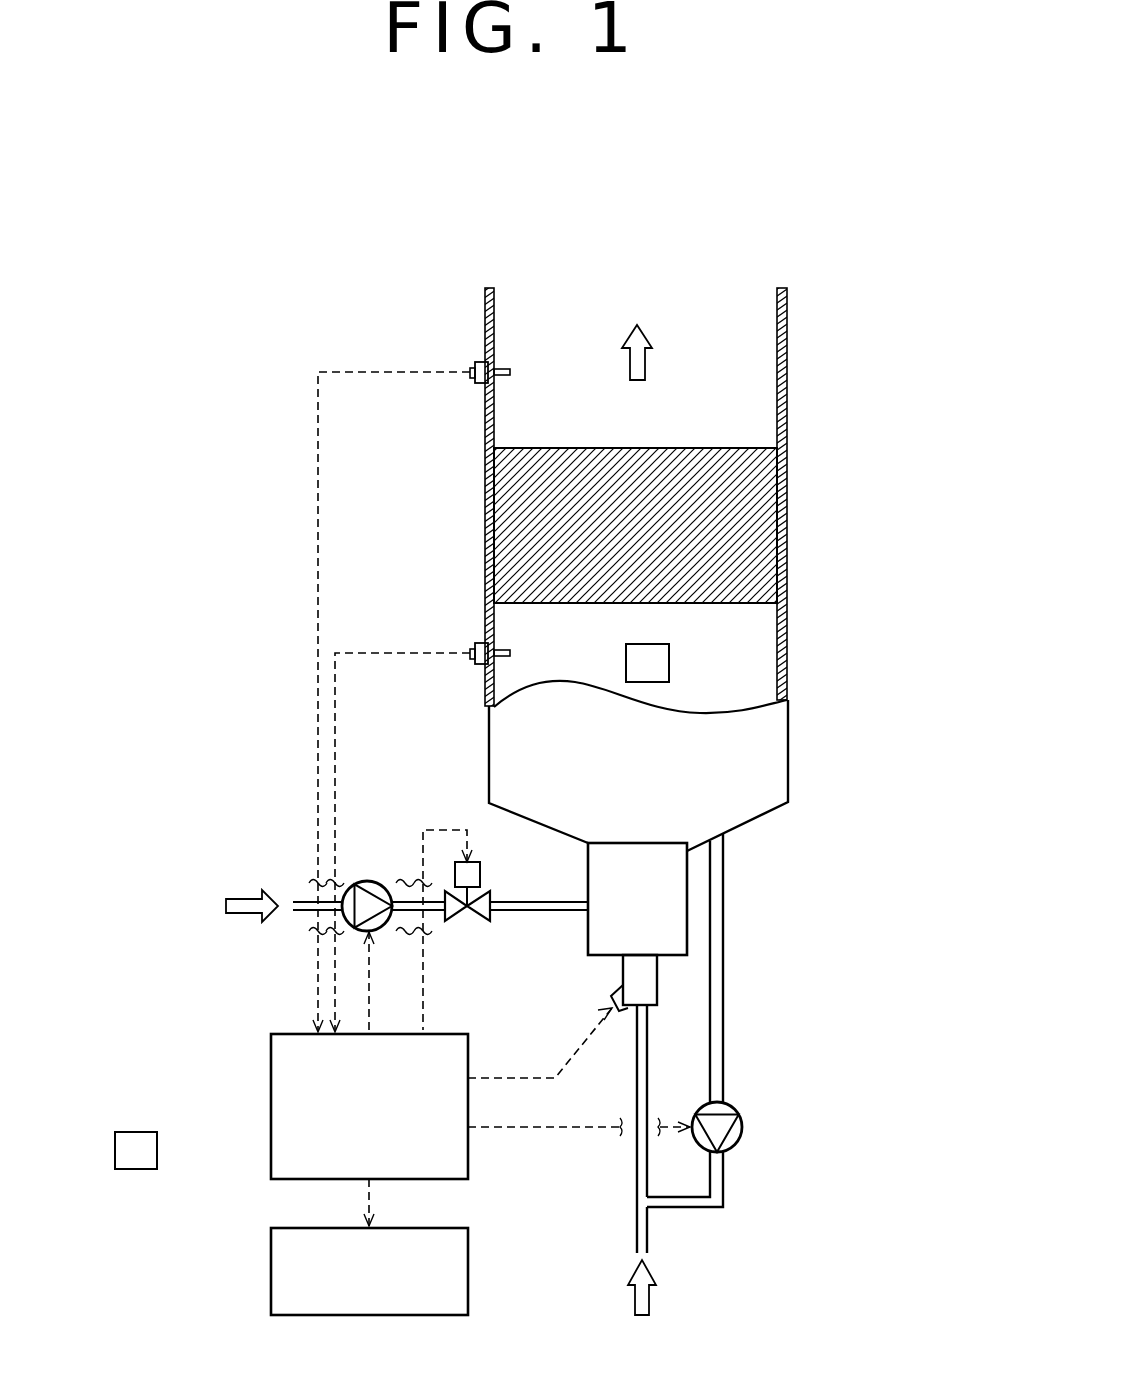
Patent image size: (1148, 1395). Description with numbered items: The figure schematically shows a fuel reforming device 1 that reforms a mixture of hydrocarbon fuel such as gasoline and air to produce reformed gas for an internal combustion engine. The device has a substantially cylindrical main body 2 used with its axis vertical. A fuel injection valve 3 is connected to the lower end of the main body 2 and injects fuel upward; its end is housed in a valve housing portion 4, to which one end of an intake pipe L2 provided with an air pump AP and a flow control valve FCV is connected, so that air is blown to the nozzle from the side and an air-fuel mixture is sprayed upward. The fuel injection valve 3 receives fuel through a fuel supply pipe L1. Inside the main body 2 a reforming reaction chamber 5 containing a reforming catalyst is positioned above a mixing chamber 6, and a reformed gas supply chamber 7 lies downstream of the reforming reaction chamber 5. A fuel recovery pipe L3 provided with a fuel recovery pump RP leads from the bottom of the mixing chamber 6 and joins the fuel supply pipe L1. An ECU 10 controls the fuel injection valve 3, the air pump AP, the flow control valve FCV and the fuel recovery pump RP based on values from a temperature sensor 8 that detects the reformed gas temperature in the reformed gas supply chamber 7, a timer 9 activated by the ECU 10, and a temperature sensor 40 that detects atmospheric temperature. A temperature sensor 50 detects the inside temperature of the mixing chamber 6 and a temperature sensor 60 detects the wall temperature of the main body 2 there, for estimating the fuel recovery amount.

The fuel reforming device 1 is at (335, 245).
The main body 2 is at (787, 508).
The fuel injection valve 3 is at (632, 976).
The valve housing portion 4 is at (606, 865).
The reforming reaction chamber 5 is at (487, 517).
The mixing chamber 6 is at (698, 677).
The reformed gas supply chamber 7 is at (698, 386).
The temperature sensor 8 is at (478, 362).
The timer 9 is at (270, 1275).
The ECU 10 is at (270, 1095).
The temperature sensor 40 is at (157, 1148).
The temperature sensor 50 is at (626, 662).
The temperature sensor 60 is at (480, 643).
The air pump AP is at (365, 880).
The flow control valve FCV is at (463, 916).
The fuel supply pipe L1 is at (637, 1218).
The intake pipe L2 is at (517, 914).
The fuel recovery pipe L3 is at (723, 1000).
The fuel recovery pump RP is at (742, 1122).